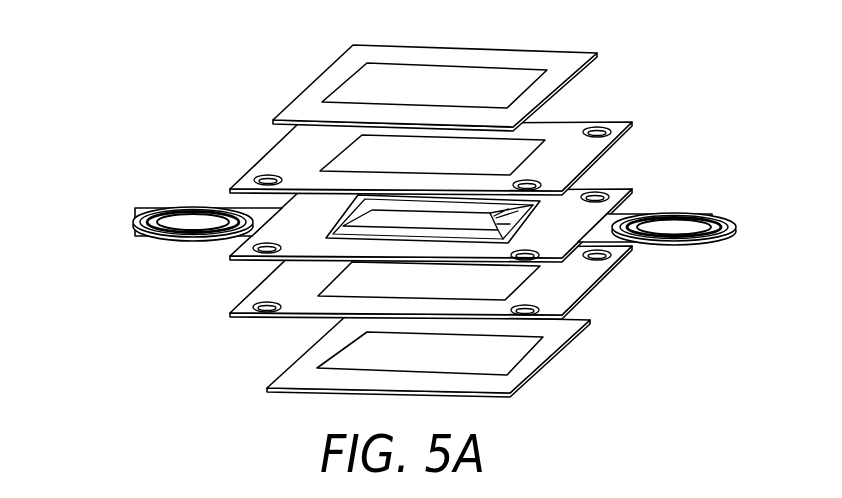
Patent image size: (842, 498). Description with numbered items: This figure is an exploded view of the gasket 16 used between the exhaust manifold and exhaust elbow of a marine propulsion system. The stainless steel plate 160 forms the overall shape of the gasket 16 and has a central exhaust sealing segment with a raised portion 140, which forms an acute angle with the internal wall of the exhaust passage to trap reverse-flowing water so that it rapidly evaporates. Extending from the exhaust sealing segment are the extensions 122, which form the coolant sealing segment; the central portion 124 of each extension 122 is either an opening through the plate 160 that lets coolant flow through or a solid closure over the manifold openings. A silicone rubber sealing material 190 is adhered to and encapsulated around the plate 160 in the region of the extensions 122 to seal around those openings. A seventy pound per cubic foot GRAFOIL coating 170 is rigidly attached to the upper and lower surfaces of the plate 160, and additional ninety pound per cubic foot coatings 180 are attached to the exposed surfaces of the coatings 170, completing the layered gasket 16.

The gasket 16 is at (196, 91).
The coating 180 is at (288, 376).
The coating 170 is at (581, 280).
The stainless steel plate 160 is at (633, 210).
The raised portion 140 is at (334, 228).
The silicone rubber sealing material 190 is at (150, 212).
The central portion 124 is at (186, 220).
The extension 122 is at (140, 232).